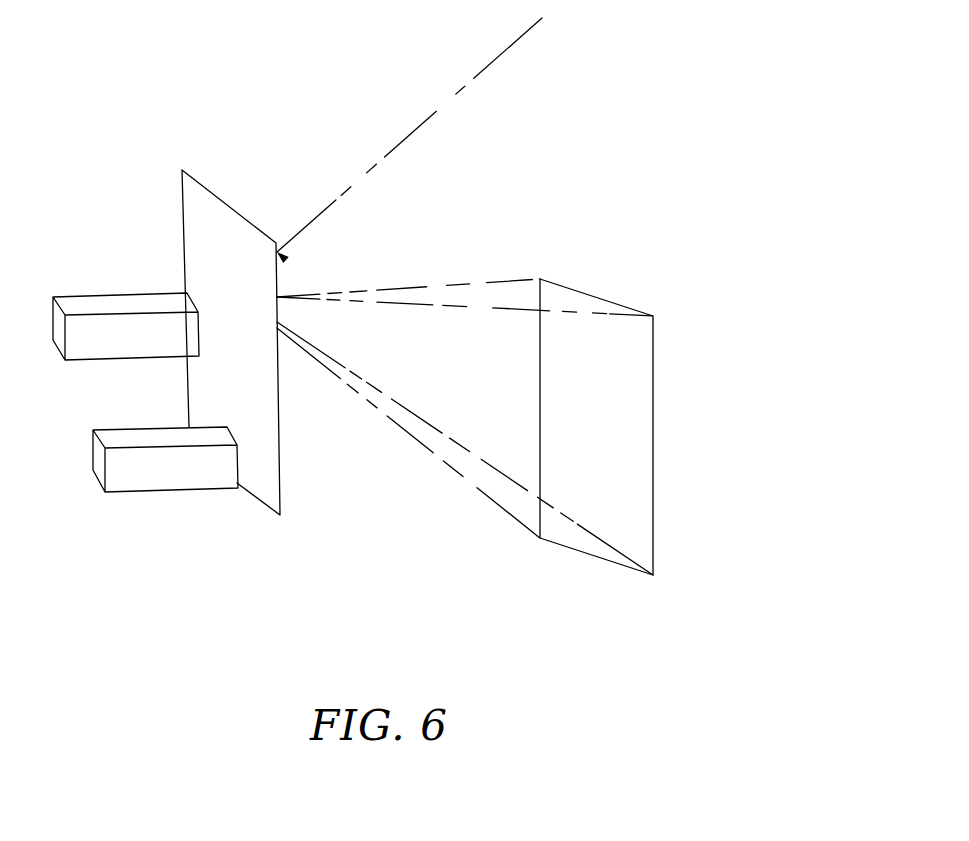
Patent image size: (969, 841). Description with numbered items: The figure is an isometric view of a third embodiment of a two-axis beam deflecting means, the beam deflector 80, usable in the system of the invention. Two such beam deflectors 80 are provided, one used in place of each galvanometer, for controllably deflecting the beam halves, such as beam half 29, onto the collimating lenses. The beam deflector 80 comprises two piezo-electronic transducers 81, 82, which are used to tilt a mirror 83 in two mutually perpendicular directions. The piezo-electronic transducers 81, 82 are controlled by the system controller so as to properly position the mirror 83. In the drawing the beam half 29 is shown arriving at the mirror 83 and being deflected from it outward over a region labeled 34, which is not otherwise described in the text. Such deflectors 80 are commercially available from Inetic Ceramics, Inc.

The beam half 29 is at (440, 107).
The field of view 34 is at (428, 284).
The two-axis beam deflector 80 is at (200, 557).
The piezo-electronic transducer 81 is at (95, 437).
The piezo-electronic transducer 82 is at (103, 303).
The mirror 83 is at (242, 213).